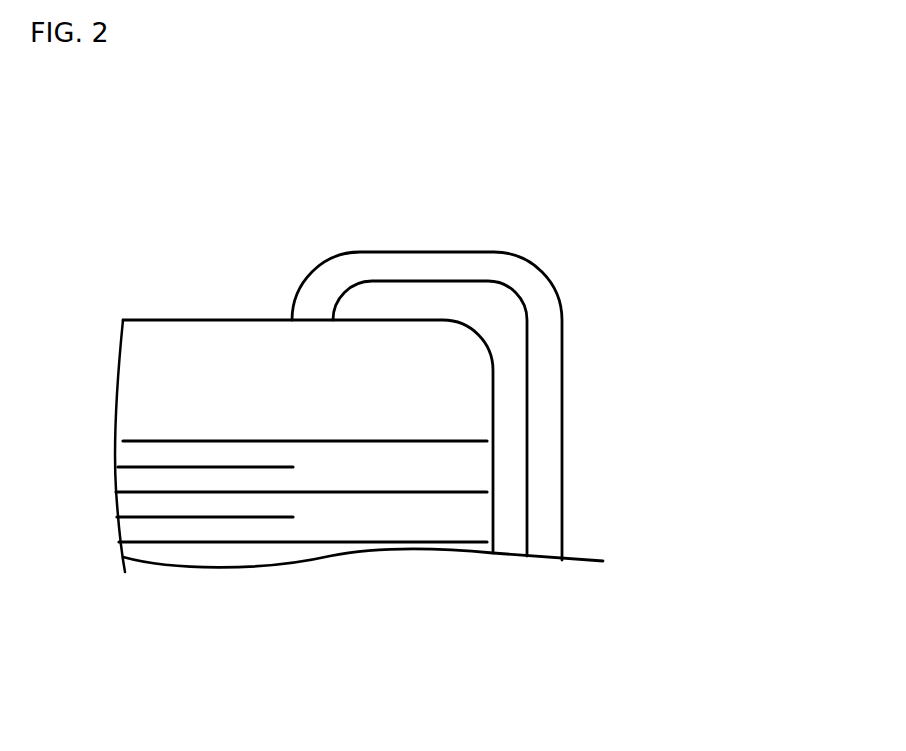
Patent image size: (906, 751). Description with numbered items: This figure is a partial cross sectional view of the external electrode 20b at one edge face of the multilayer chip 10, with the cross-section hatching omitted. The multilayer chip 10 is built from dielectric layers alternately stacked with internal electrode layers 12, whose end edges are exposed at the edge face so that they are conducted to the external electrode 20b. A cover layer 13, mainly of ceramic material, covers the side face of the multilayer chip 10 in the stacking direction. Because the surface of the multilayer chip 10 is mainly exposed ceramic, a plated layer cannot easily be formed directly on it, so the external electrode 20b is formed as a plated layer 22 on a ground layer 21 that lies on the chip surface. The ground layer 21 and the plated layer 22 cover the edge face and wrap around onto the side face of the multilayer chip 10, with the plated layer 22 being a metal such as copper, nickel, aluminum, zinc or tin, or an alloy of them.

The multilayer chip 10 is at (140, 311).
The internal electrode layers 12 is at (348, 546).
The cover layer 13 is at (197, 358).
The external electrode 20b is at (712, 196).
The ground layer 21 is at (508, 462).
The plated layer 22 is at (547, 305).